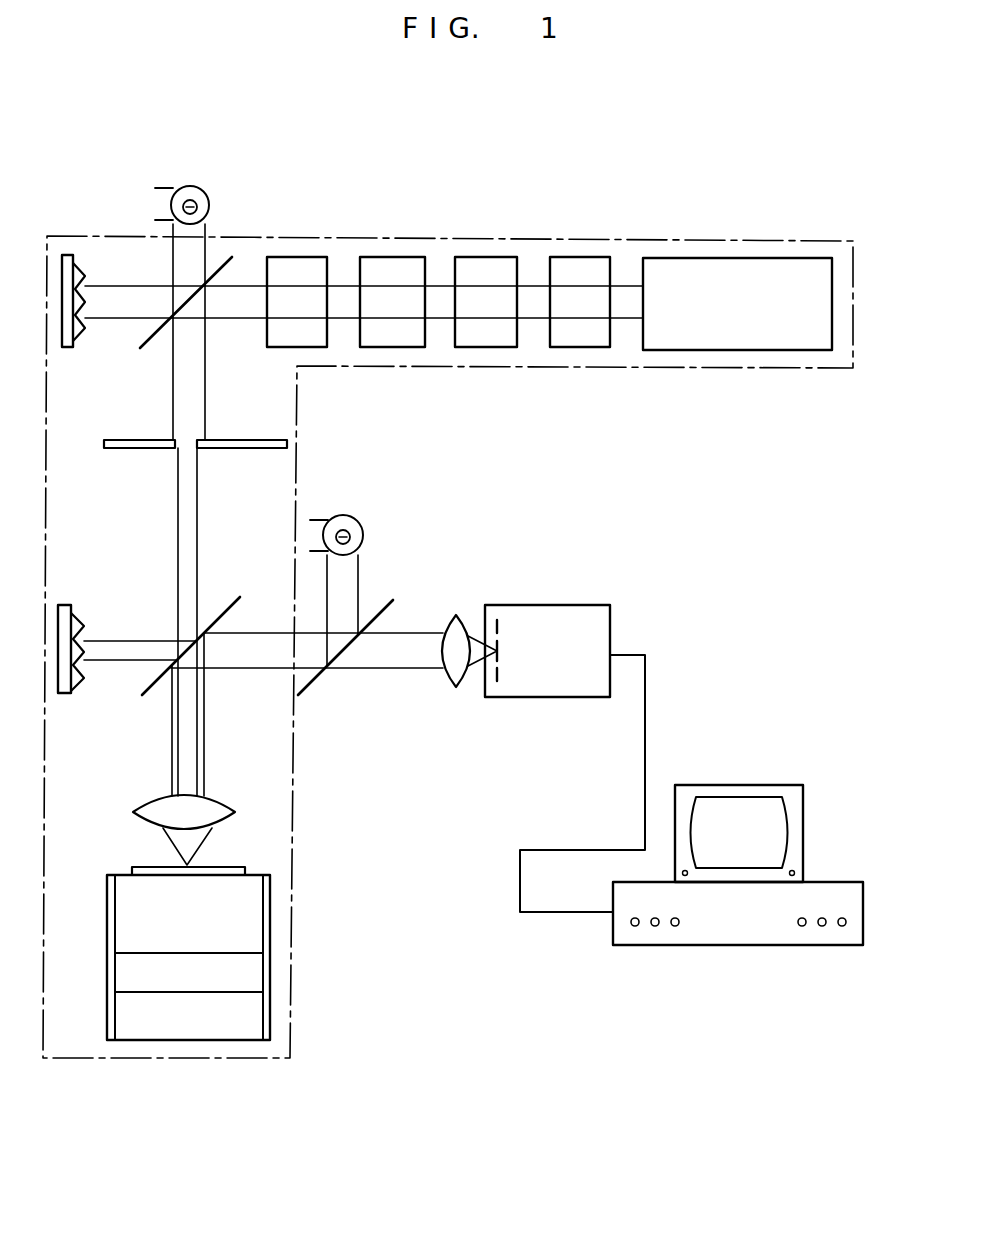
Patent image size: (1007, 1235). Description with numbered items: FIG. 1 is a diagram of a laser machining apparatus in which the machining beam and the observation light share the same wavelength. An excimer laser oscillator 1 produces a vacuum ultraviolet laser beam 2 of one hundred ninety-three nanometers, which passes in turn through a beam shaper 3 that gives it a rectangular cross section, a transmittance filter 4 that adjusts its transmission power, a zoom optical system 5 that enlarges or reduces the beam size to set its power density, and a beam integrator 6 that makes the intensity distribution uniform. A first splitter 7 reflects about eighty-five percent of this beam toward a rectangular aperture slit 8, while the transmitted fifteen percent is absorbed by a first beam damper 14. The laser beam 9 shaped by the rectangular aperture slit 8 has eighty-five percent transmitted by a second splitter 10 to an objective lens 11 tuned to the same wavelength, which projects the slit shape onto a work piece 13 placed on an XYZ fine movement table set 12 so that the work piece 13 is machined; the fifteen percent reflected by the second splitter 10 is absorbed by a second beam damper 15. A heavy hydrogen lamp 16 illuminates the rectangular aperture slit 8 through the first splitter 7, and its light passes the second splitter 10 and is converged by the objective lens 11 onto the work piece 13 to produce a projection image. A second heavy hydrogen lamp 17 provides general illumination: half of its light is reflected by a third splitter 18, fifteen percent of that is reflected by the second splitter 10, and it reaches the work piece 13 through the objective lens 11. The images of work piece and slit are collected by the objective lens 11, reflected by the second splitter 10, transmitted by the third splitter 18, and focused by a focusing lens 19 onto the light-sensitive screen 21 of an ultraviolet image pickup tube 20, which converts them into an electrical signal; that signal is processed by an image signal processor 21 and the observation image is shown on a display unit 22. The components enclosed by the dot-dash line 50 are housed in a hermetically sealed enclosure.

The excimer laser oscillator 1 is at (714, 258).
The vacuum ultraviolet laser beam 2 is at (625, 287).
The beam shaper 3 is at (565, 257).
The transmittance filter 4 is at (467, 256).
The zoom optical system 5 is at (406, 348).
The beam integrator 6 is at (313, 348).
The first splitter 7 is at (232, 257).
The rectangular aperture slit 8 is at (263, 452).
The laser beam 9 is at (190, 527).
The second splitter 10 is at (147, 692).
The objective lens 11 is at (222, 800).
The XYZ fine movement table set 12 is at (270, 930).
The work piece 13 is at (230, 867).
The first beam damper 14 is at (67, 255).
The second beam damper 15 is at (69, 605).
The heavy hydrogen lamp 16 is at (190, 186).
The heavy hydrogen lamp 17 is at (366, 530).
The third splitter 18 is at (310, 692).
The focusing lens 19 is at (465, 688).
The ultraviolet image pickup tube 20 is at (585, 605).
The light-sensitive screen / image signal processor 21 is at (498, 625).
The display unit 22 is at (805, 808).
The optical system housing 50 is at (814, 240).